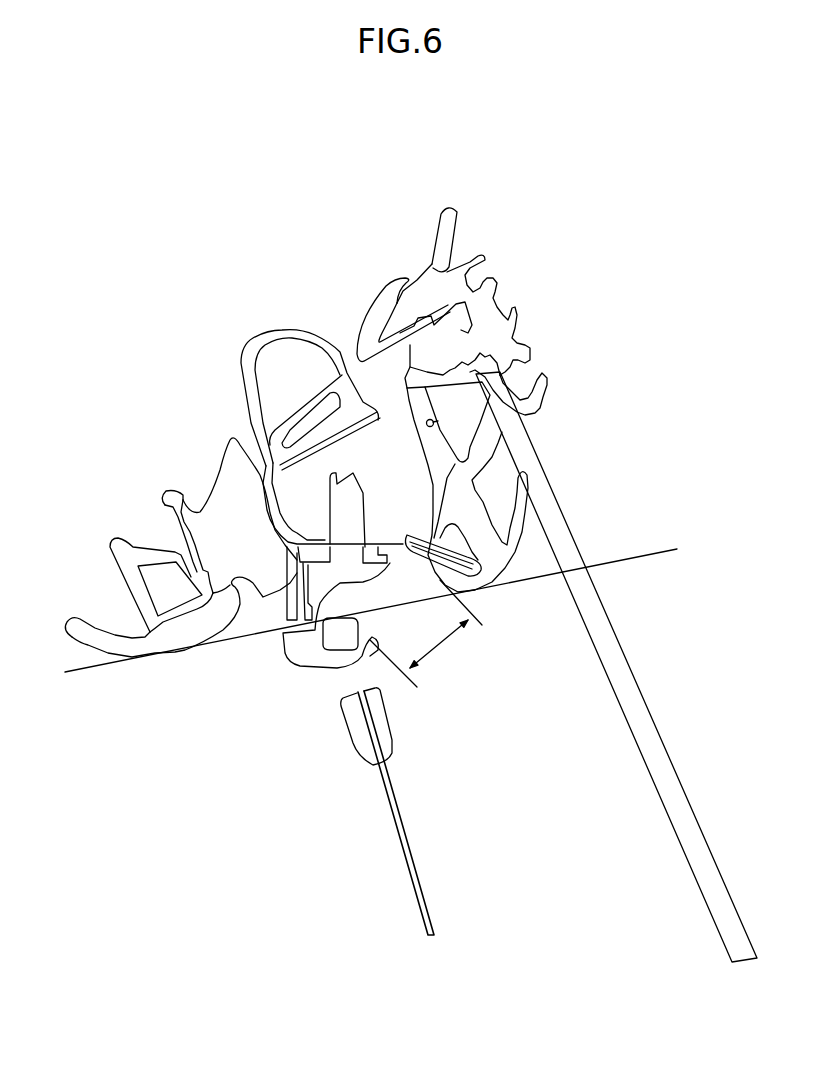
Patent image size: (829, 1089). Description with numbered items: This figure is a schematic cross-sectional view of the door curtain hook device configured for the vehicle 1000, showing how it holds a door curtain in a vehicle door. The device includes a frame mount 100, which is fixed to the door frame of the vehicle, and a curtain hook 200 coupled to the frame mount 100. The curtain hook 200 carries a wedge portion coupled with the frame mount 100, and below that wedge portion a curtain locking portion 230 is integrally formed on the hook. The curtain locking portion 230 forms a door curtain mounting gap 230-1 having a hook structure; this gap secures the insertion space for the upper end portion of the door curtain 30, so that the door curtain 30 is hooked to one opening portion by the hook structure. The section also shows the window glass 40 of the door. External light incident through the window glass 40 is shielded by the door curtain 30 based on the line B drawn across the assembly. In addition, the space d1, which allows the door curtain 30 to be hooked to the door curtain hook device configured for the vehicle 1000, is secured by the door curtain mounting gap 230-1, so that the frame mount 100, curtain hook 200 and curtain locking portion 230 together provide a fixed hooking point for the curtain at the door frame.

The curtain hook 200 is at (350, 517).
The frame mount 100 is at (297, 555).
The curtain locking portion 230 is at (302, 658).
The door curtain mounting gap 230-1 is at (332, 602).
The line B is at (381, 604).
The space d1 is at (426, 633).
The window glass 40 is at (637, 718).
The door curtain 30 is at (410, 853).
The door curtain hook device configured for a vehicle 1000 is at (265, 665).